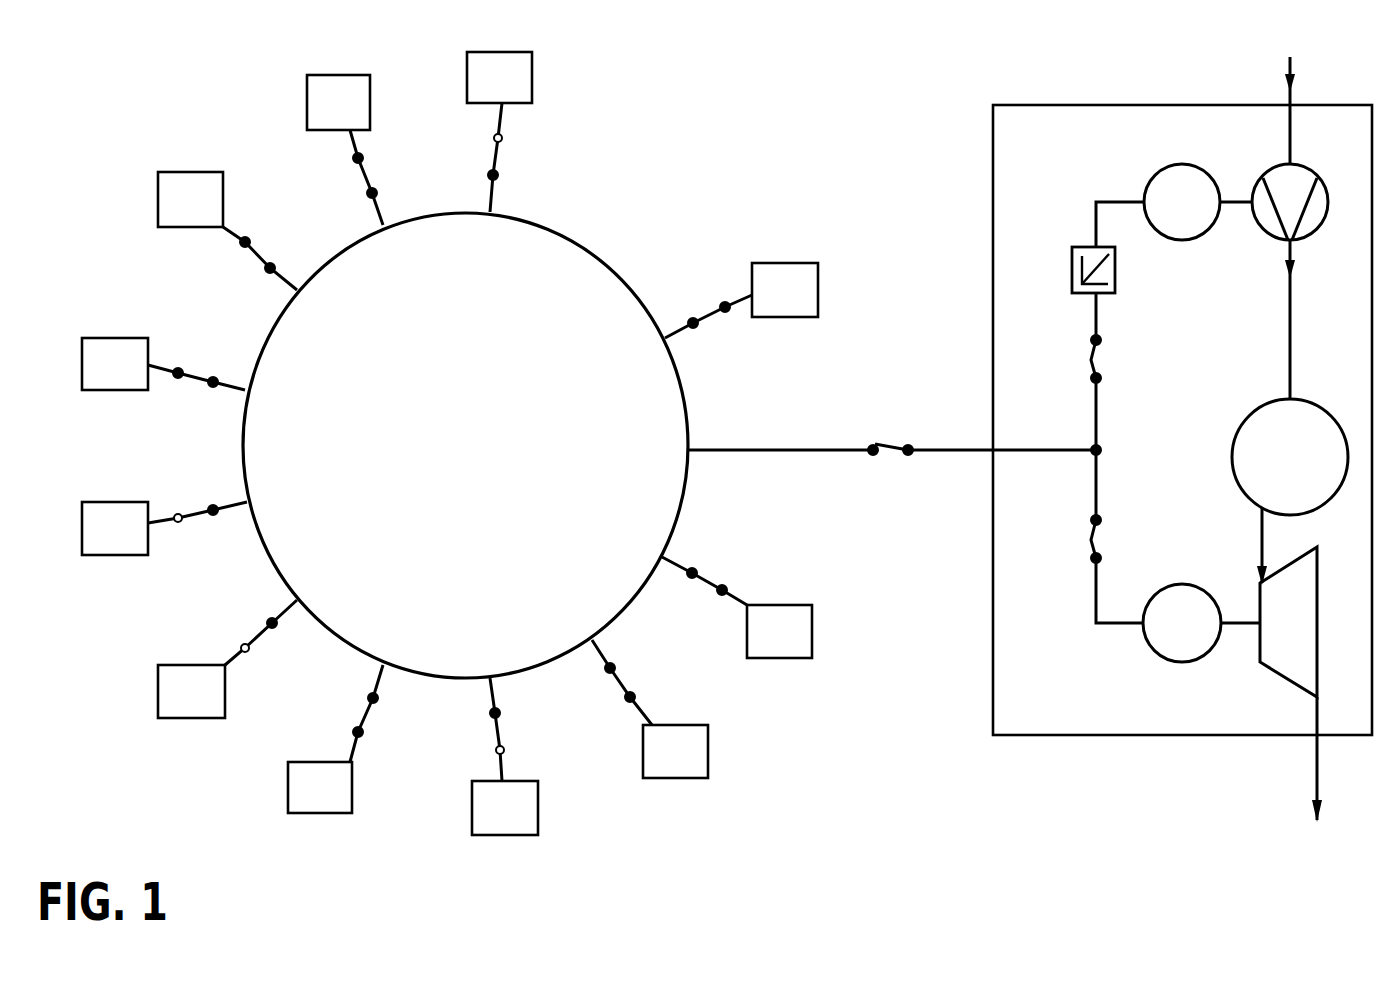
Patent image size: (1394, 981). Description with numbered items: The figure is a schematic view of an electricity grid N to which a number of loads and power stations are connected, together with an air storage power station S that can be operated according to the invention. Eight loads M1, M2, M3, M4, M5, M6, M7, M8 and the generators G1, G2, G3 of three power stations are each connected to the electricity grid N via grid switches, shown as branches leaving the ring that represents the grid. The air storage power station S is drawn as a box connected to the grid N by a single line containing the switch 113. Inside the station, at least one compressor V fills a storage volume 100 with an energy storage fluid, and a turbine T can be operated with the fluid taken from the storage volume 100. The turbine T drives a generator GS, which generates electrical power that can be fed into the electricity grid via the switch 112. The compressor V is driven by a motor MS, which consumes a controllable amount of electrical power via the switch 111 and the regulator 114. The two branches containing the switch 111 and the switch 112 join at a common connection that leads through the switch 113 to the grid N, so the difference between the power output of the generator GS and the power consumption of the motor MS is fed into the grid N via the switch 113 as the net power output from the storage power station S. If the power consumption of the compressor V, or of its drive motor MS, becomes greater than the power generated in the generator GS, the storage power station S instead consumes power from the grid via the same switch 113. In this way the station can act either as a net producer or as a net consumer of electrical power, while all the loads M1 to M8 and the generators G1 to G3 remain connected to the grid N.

The electricity grid N is at (587, 248).
The air storage power station S is at (1050, 694).
The turbine T is at (1289, 665).
The compressor V is at (1302, 228).
The motor MS is at (1174, 205).
The generator GS is at (1201, 623).
The storage volume 100 is at (1290, 457).
The switch 111 is at (1059, 371).
The switch 112 is at (1080, 536).
The switch 113 is at (894, 428).
The regulator 114 is at (1115, 268).
The load M1 is at (227, 231).
The load M2 is at (163, 364).
The load M3 is at (227, 659).
The load M4 is at (505, 756).
The load M5 is at (650, 709).
The load M6 is at (499, 132).
The load M7 is at (737, 607).
The load M8 is at (741, 300).
The generator G1 is at (164, 528).
The generator G2 is at (335, 739).
The generator G3 is at (345, 150).